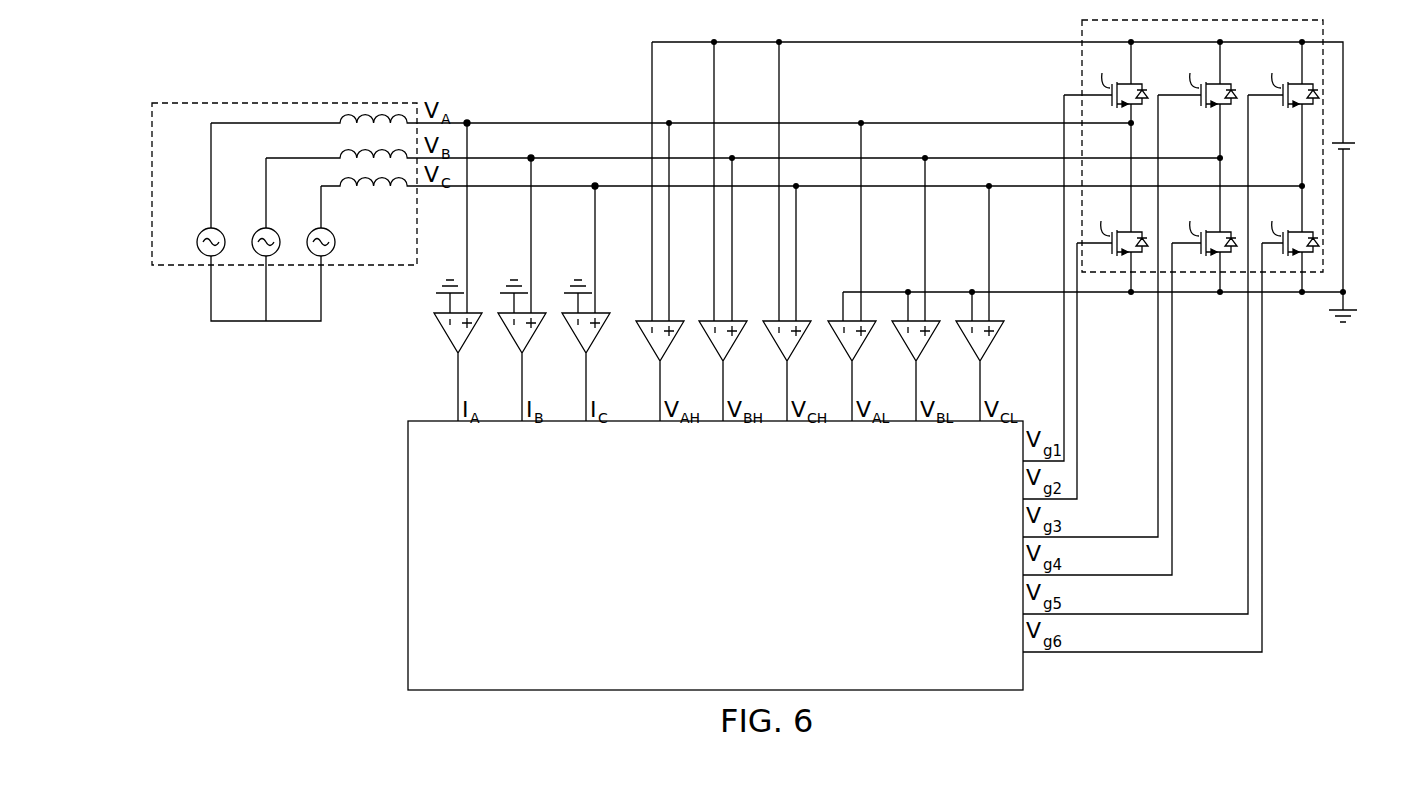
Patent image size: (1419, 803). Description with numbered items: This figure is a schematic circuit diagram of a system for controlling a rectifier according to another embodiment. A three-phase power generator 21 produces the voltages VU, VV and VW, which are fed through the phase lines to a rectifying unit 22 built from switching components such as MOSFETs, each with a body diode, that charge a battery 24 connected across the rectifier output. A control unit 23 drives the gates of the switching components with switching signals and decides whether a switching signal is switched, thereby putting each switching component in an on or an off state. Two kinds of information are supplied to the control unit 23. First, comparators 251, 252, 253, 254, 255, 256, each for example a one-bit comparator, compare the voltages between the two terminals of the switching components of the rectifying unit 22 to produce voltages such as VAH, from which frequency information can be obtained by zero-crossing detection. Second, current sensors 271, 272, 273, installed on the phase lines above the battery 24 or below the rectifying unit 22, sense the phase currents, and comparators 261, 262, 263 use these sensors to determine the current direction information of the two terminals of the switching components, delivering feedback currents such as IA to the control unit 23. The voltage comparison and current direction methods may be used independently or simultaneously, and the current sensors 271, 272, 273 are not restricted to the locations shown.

The power generator 21 is at (217, 103).
The rectifying unit 22 is at (1285, 20).
The control unit 23 is at (408, 556).
The battery 24 is at (1348, 142).
The comparator 251 is at (655, 350).
The comparator 252 is at (718, 350).
The comparator 253 is at (782, 350).
The comparator 254 is at (847, 350).
The comparator 255 is at (911, 350).
The comparator 256 is at (975, 350).
The comparator 261 is at (453, 343).
The comparator 262 is at (517, 343).
The comparator 263 is at (581, 343).
The current sensor 271 is at (467, 118).
The current sensor 272 is at (531, 153).
The current sensor 273 is at (595, 181).